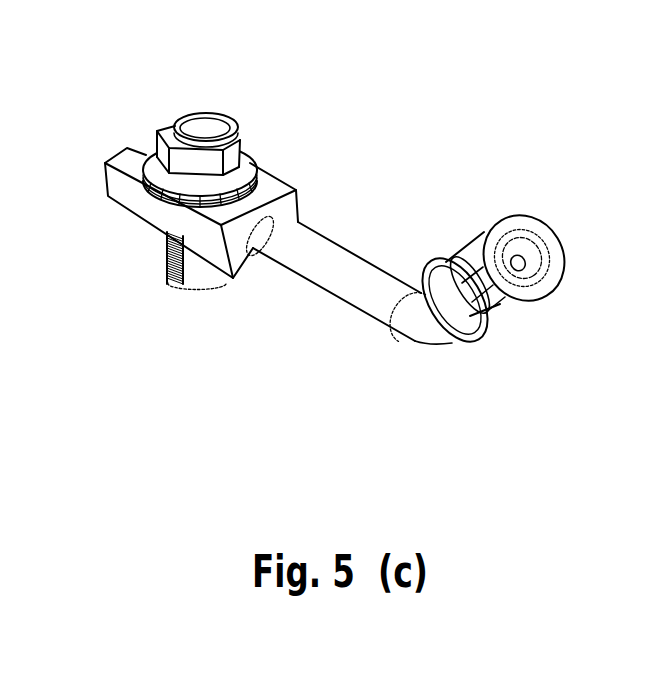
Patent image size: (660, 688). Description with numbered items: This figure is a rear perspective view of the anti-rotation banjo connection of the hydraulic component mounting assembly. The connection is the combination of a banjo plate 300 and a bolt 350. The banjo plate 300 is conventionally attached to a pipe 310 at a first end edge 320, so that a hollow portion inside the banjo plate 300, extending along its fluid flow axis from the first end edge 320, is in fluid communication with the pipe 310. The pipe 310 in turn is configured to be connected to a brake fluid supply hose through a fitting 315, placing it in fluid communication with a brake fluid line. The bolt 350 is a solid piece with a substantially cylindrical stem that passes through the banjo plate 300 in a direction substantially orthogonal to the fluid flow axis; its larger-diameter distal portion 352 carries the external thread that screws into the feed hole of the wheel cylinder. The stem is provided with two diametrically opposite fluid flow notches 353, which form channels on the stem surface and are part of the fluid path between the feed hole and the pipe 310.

The banjo plate 300 is at (272, 185).
The pipe 310 is at (340, 285).
The fitting 315 is at (520, 294).
The first end edge 320 is at (289, 207).
The bolt 350 is at (202, 130).
The distal portion 352 is at (205, 268).
The fluid flow notches 353 is at (166, 283).